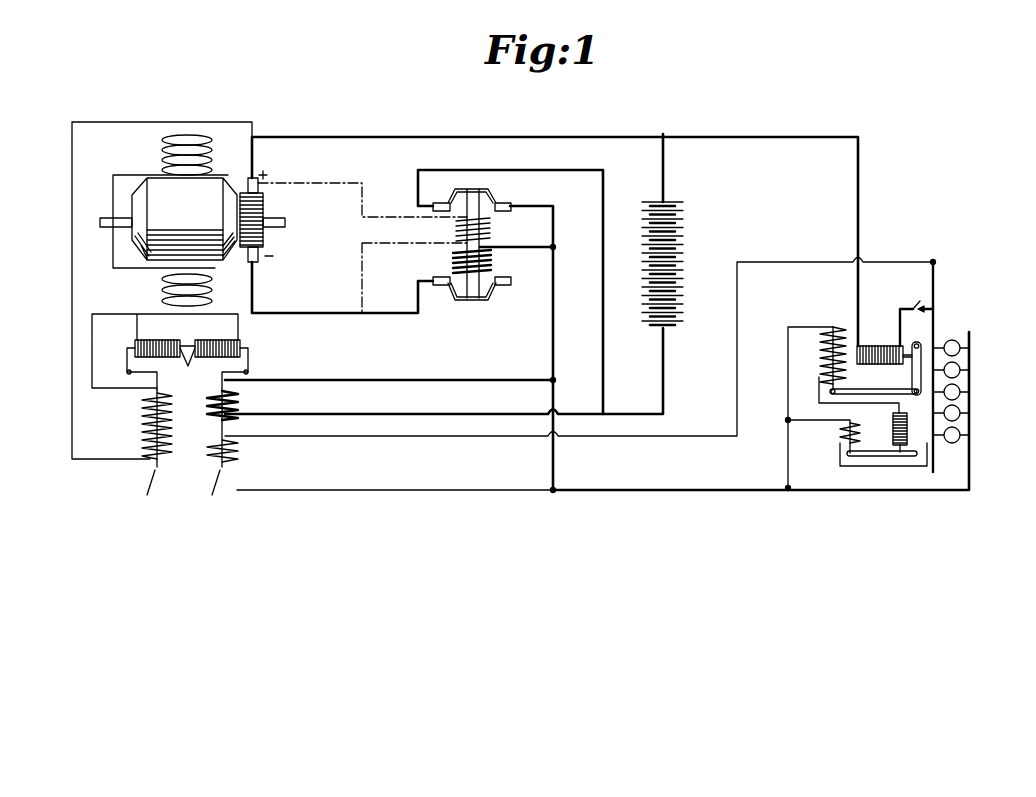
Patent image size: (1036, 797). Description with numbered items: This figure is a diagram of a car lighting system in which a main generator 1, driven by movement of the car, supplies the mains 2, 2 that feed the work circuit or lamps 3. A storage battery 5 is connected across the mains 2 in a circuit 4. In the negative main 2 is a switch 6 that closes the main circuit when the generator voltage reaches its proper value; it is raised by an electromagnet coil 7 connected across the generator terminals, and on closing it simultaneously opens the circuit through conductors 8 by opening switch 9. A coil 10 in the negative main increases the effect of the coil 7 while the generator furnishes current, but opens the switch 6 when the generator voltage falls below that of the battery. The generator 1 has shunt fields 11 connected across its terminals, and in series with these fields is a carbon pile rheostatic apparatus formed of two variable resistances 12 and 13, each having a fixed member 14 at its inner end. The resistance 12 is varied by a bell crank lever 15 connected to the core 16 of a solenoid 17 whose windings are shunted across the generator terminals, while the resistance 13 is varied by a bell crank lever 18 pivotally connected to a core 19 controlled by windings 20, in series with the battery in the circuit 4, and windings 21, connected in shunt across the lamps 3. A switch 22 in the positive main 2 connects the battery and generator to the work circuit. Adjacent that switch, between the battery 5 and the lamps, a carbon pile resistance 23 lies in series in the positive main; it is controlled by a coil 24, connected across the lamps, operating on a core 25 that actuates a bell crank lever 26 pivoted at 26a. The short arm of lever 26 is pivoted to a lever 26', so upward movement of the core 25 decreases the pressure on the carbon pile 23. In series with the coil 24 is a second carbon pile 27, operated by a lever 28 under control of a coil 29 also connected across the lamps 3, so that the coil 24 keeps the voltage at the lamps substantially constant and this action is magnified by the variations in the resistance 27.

The main generator 1 is at (165, 190).
The mains 2 is at (512, 135).
The lamps 3 is at (958, 352).
The circuit 4 is at (448, 380).
The storage battery 5 is at (683, 281).
The switch 6 is at (475, 302).
The electromagnet coil 7 is at (492, 233).
The conductors 8 is at (538, 206).
The switch 9 is at (485, 181).
The coil 10 is at (445, 259).
The shunt fields 11 is at (175, 135).
The carbon pile variable resistance 12 is at (156, 345).
The carbon pile variable resistance 13 is at (212, 345).
The fixed member 14 is at (188, 366).
The bell crank lever 15 is at (127, 359).
The core 16 is at (142, 492).
The electromagnet or solenoid 17 is at (142, 422).
The bell crank lever 18 is at (250, 361).
The core 19 is at (208, 492).
The electromagnet windings 20 is at (245, 403).
The electromagnet windings 21 is at (245, 454).
The switch 22 is at (911, 305).
The carbon pile resistance 23 is at (879, 346).
The coil 24 is at (825, 361).
The core 25 is at (840, 387).
The bell crank lever 26 is at (904, 368).
The lever 26' is at (952, 327).
The pivot 26a is at (919, 431).
The second carbon pile 27 is at (840, 436).
The lever 28 is at (880, 458).
The coil 29 is at (866, 454).